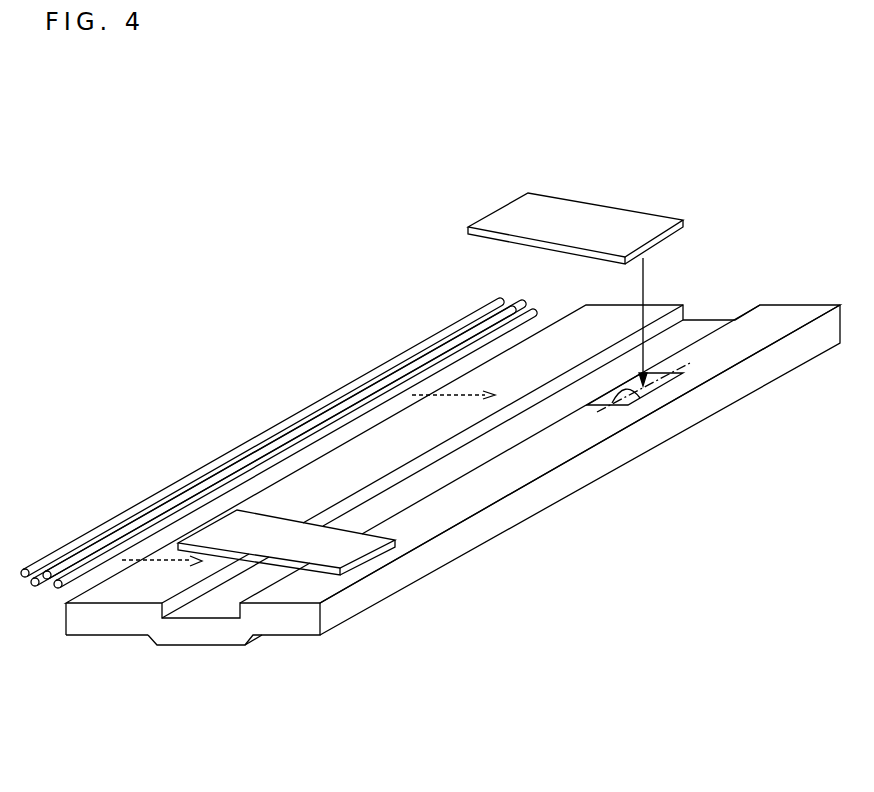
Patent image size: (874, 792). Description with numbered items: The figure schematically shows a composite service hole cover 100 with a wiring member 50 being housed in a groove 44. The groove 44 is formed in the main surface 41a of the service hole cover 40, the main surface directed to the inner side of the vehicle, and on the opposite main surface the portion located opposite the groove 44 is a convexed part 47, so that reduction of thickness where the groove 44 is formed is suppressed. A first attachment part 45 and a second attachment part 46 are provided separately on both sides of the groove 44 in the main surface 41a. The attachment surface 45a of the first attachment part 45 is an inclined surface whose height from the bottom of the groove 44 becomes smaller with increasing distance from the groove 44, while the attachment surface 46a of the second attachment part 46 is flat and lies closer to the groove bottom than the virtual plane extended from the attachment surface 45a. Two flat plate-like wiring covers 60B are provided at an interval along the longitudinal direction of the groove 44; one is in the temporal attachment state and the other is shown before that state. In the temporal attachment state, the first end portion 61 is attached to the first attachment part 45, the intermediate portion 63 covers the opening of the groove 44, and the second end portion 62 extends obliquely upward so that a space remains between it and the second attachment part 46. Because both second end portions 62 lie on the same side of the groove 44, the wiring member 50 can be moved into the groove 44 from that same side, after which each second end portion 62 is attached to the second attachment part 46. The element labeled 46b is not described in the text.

The composite service hole cover 100 is at (222, 308).
The service hole cover 40 is at (352, 621).
The main surface 41a is at (112, 597).
The groove 44 is at (697, 330).
The first attachment part 45 is at (666, 371).
The attachment surface 45a is at (641, 410).
The second attachment part 46 is at (461, 487).
The attachment surface 46a is at (580, 353).
The bottom surface 46b is at (130, 638).
The convexed part 47 is at (160, 648).
The wiring member 50 is at (24, 590).
The wiring cover 60B is at (596, 199).
The first end portion 61 is at (650, 225).
The second end portion 62 is at (518, 212).
The intermediate portion 63 is at (546, 230).